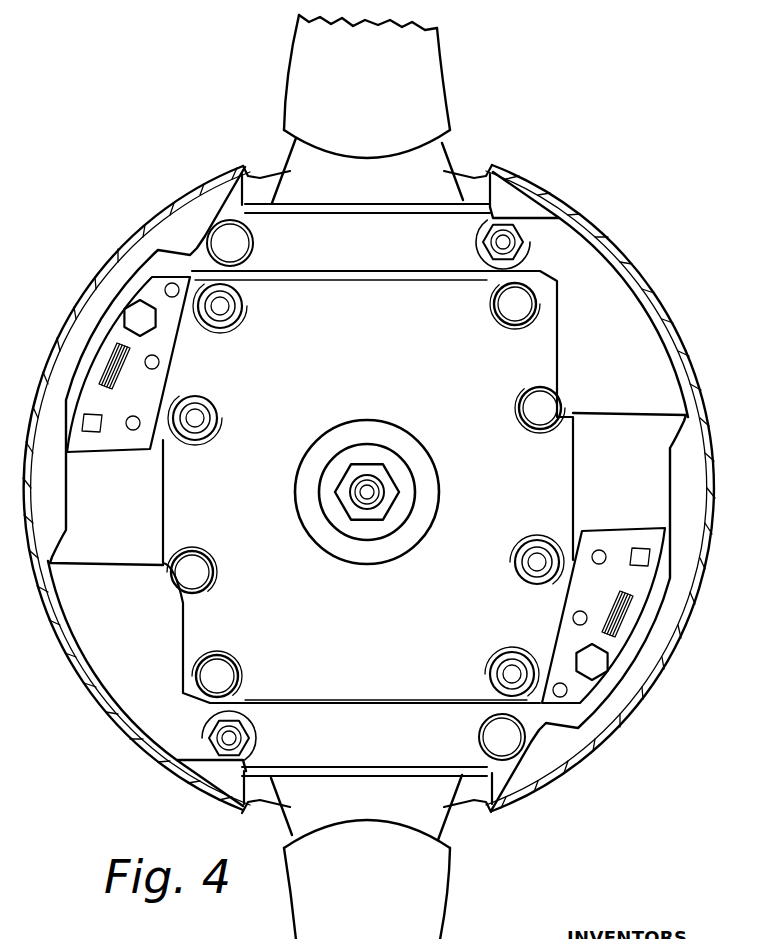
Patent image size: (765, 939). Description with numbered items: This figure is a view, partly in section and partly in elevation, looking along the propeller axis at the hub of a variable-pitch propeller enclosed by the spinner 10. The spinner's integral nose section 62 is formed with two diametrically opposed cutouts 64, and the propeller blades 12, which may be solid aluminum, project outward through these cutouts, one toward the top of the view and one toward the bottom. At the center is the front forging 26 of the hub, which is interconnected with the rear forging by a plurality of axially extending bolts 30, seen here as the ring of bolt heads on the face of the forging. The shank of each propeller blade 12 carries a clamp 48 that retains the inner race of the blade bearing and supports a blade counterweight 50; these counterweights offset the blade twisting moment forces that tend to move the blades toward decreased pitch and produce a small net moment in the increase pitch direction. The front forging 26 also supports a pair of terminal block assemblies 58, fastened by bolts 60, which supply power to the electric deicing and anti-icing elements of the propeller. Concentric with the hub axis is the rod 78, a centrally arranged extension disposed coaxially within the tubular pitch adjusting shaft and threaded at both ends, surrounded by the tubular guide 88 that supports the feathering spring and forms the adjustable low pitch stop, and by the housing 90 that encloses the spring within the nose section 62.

The spinner 10 is at (609, 241).
The propeller blade 12 is at (432, 73).
The front forging 26 is at (575, 466).
The axially extending bolt 30 is at (512, 305).
The clamp 48 is at (398, 228).
The blade counterweight 50 is at (636, 313).
The terminal block assembly 58 is at (168, 350).
The bolt 60 is at (222, 306).
The nose section 62 is at (571, 210).
The cutout 64 is at (478, 172).
The rod 78 is at (368, 491).
The tubular guide 88 is at (357, 518).
The housing 90 is at (409, 558).